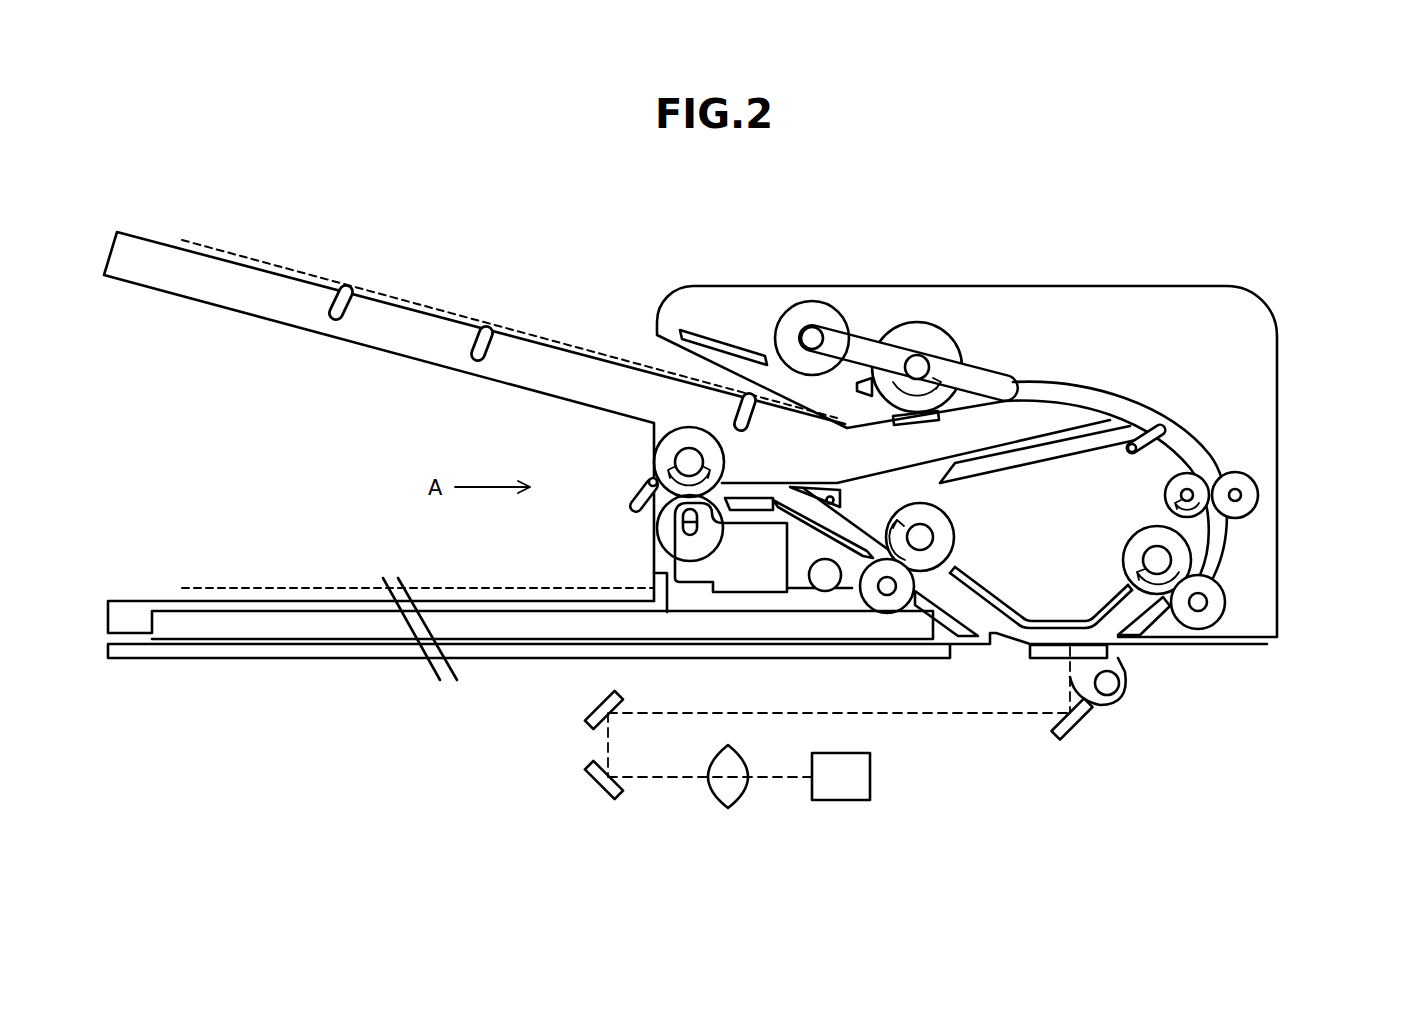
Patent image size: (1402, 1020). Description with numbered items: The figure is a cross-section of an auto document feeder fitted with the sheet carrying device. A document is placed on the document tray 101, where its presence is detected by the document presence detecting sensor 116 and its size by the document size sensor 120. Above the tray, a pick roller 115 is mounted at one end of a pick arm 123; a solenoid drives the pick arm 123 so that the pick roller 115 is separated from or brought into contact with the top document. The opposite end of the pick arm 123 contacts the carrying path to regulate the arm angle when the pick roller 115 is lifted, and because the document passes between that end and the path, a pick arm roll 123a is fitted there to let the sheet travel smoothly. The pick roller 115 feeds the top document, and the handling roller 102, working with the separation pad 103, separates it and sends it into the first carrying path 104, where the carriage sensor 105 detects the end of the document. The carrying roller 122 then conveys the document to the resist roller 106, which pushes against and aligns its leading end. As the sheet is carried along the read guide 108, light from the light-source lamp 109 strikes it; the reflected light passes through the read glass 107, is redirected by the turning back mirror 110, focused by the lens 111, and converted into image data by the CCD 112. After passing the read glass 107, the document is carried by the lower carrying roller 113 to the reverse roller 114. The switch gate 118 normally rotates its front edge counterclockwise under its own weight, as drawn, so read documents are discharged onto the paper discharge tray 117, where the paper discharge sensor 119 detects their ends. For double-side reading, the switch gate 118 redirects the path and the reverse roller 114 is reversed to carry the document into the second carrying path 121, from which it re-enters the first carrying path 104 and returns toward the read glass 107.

The document tray 101 is at (154, 243).
The handling roller 102 is at (926, 322).
The separation pad 103 is at (905, 425).
The first carrying path 104 is at (1188, 428).
The carriage sensor 105 is at (1158, 432).
The resist roller 106 is at (1210, 558).
The read glass 107 is at (1038, 662).
The read guide 108 is at (1032, 625).
The light-source lamp 109 is at (1125, 694).
The turning back mirror 110 is at (585, 775).
The lens 111 is at (727, 808).
The CCD 112 is at (840, 800).
The lower carrying roller 113 is at (955, 525).
The reverse roller 114 is at (671, 432).
The pick roller 115 is at (812, 300).
The document presence detecting sensor 116 is at (747, 396).
The paper discharge tray 117 is at (148, 600).
The switch gate 118 is at (806, 488).
The paper discharge sensor 119 is at (640, 478).
The document size sensor 120 is at (482, 328).
The second carrying path 121 is at (1050, 430).
The carrying roller 122 is at (1223, 458).
The pick arm 123 is at (866, 338).
The pick arm roll 123a is at (1008, 374).